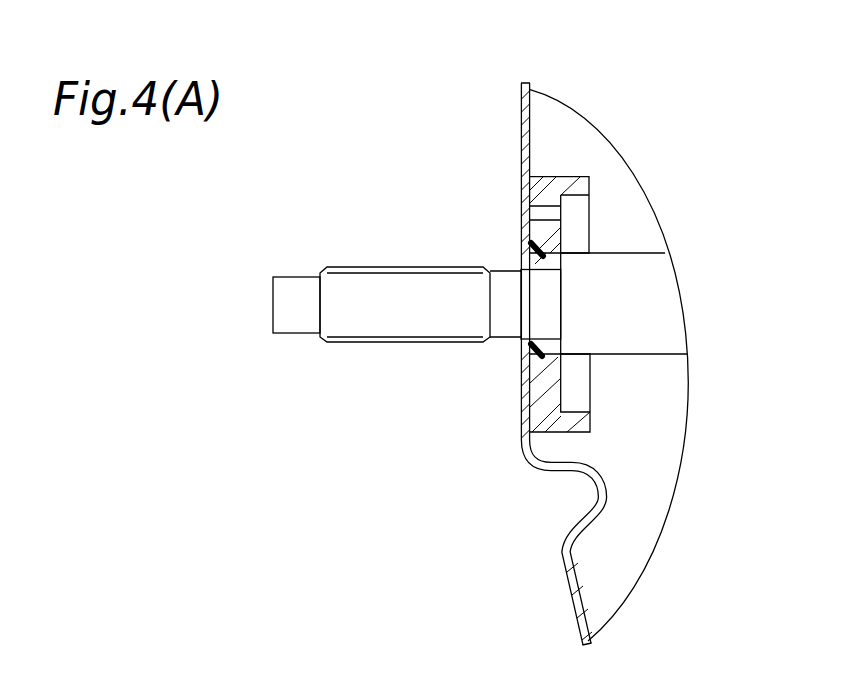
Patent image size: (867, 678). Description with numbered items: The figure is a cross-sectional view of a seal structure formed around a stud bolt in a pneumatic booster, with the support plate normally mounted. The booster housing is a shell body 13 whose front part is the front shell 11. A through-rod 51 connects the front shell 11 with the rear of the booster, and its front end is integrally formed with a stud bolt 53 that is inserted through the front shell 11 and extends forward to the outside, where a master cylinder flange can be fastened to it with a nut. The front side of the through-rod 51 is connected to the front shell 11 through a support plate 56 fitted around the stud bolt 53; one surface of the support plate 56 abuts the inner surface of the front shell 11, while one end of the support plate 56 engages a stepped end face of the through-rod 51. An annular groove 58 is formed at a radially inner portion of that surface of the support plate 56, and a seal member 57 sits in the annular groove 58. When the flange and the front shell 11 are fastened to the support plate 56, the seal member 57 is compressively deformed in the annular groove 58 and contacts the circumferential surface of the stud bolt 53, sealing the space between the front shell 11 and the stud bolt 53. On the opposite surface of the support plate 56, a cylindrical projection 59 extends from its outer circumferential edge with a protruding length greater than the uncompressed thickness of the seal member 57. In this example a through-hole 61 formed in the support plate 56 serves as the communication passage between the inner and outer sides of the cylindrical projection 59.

The front shell 11 is at (558, 573).
The shell body 13 is at (520, 118).
The through-rod 51 is at (658, 288).
The stud bolt 53 is at (402, 287).
The support plate 56 is at (562, 175).
The seal member 57 is at (530, 258).
The annular groove 58 is at (522, 350).
The cylindrical projection 59 is at (582, 422).
The through-hole 61 is at (550, 213).